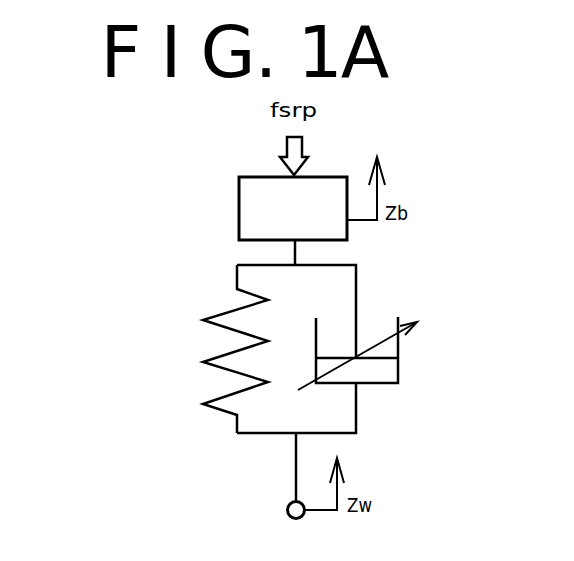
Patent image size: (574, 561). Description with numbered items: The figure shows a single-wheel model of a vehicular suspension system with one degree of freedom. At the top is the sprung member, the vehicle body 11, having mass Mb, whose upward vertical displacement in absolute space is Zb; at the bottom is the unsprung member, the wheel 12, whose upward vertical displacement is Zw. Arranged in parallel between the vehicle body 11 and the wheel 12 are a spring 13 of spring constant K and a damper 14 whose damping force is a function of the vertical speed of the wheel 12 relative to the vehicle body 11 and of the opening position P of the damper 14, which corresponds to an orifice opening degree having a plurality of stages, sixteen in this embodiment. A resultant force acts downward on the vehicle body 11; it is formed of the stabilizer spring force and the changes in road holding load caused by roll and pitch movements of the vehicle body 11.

The vehicle body 11 is at (239, 218).
The wheel 12 is at (288, 505).
The spring 13 is at (230, 312).
The damper 14 is at (398, 358).